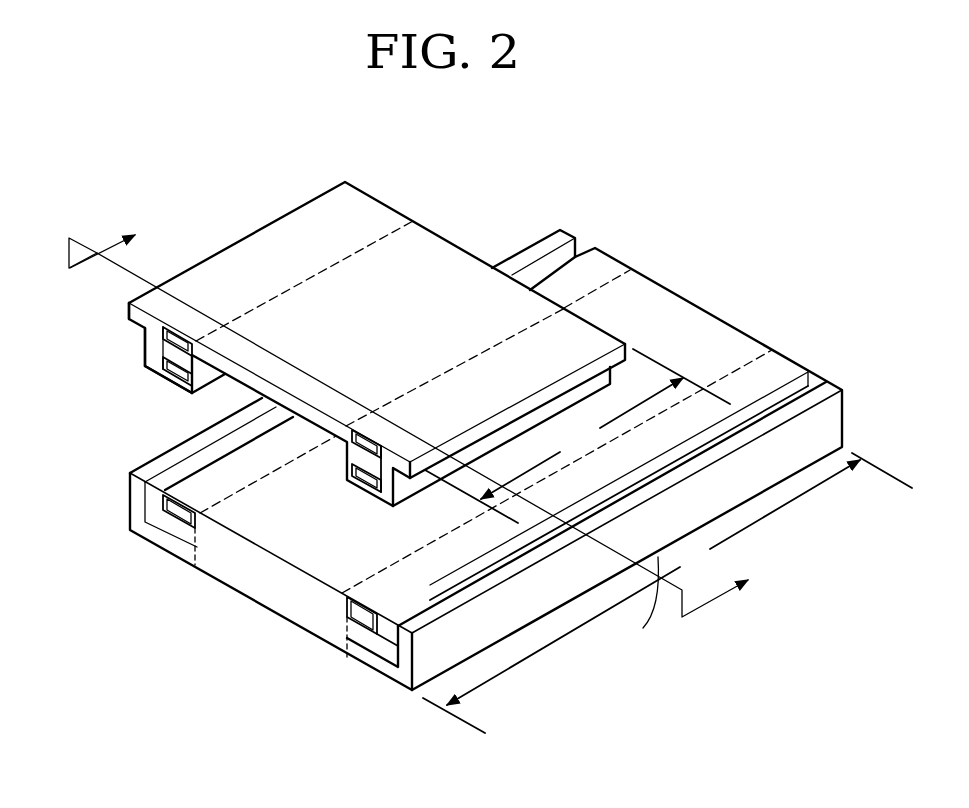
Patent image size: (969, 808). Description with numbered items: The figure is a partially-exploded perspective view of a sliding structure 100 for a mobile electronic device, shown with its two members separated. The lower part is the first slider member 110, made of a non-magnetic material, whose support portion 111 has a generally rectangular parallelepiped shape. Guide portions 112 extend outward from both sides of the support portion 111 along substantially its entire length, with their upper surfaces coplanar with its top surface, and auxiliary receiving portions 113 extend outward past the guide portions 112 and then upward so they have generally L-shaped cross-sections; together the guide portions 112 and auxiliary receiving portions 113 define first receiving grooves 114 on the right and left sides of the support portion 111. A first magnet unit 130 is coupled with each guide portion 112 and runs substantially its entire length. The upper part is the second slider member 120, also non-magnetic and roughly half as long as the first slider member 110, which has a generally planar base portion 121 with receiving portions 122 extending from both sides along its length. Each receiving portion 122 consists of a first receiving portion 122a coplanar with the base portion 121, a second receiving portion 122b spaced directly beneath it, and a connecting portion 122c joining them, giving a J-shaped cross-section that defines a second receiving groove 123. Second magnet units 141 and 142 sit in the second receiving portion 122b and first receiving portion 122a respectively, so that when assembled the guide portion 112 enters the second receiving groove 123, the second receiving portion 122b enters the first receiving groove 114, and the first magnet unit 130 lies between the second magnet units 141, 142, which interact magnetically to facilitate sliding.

The sliding structure 100 is at (640, 164).
The first slider member 110 is at (235, 602).
The support portion 111 is at (276, 597).
The guide portion 112 is at (181, 530).
The auxiliary receiving portion 113 is at (140, 504).
The first receiving groove 114 is at (176, 525).
The second slider member 120 is at (489, 247).
The base portion 121 is at (434, 243).
The receiving portion 122 is at (331, 227).
The first receiving portion 122a is at (129, 316).
The second receiving portion 122b is at (163, 373).
The connecting portion 122c is at (155, 346).
The second receiving groove 123 is at (182, 361).
The first magnet unit 130 is at (158, 488).
The second magnet unit 141 is at (172, 388).
The second magnet unit 142 is at (180, 341).